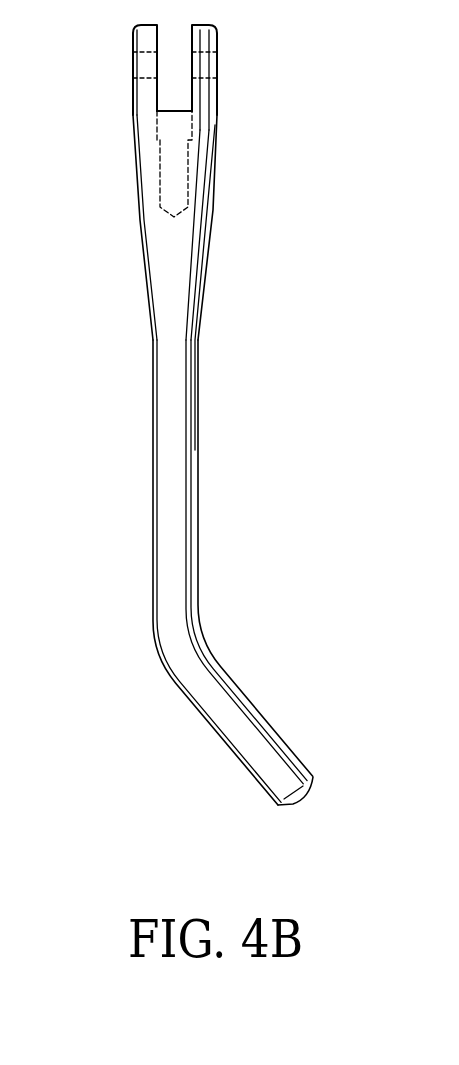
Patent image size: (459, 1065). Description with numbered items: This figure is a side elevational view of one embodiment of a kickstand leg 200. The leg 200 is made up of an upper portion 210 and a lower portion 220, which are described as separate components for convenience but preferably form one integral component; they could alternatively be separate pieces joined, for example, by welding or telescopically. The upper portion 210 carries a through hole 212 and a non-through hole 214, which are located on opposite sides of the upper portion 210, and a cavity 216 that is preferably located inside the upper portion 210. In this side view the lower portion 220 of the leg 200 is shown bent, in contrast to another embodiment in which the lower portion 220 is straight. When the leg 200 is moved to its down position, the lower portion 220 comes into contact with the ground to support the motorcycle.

The leg 200 is at (219, 415).
The upper portion 210 is at (189, 237).
The through hole 212 is at (133, 64).
The non-through hole 214 is at (215, 72).
The cavity 216 is at (163, 183).
The lower portion 220 is at (242, 689).